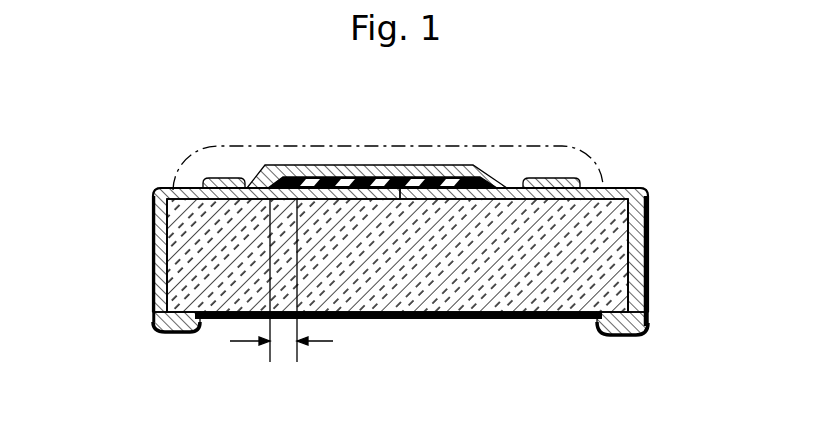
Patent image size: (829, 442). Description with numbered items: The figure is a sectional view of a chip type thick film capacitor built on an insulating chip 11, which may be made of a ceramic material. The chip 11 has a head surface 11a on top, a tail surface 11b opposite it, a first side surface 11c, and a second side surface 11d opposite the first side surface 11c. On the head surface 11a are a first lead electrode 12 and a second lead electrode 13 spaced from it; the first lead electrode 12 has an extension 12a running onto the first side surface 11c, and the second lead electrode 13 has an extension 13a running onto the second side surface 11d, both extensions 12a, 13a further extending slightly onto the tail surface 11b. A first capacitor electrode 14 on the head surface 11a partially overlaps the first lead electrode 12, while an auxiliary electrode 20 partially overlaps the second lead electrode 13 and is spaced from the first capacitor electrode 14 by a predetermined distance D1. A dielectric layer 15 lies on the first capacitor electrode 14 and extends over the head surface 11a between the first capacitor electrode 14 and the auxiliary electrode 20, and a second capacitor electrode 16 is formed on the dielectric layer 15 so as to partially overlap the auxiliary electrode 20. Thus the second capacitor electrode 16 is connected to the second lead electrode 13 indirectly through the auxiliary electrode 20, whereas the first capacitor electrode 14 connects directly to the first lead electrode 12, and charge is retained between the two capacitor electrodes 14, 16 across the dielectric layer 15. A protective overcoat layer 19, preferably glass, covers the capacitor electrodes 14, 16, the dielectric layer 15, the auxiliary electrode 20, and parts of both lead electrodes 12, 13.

The insulating chip 11 is at (407, 322).
The head surface 11a is at (525, 186).
The tail surface 11b is at (517, 322).
The first side surface 11c is at (648, 215).
The second side surface 11d is at (155, 238).
The first lead electrode 12 is at (620, 190).
The extension of first lead electrode 12a is at (648, 282).
The second lead electrode 13 is at (170, 190).
The extension of second lead electrode 13a is at (153, 272).
The first capacitor electrode 14 is at (455, 199).
The dielectric layer 15 is at (498, 177).
The second capacitor electrode 16 is at (385, 165).
The protective overcoat layer 19 is at (290, 147).
The auxiliary electrode 20 is at (227, 180).
The predetermined distance D1 is at (282, 348).